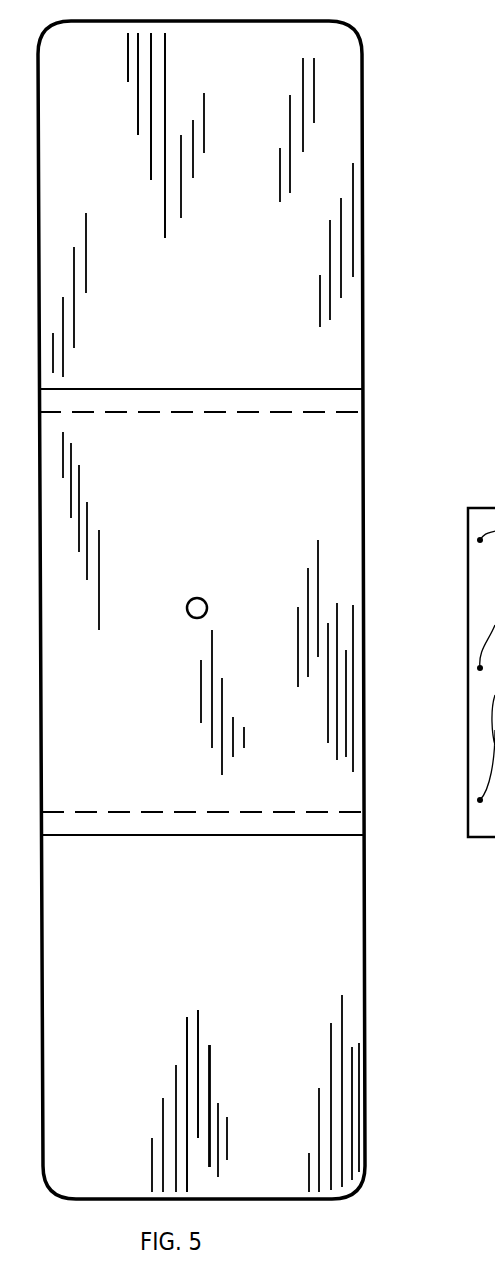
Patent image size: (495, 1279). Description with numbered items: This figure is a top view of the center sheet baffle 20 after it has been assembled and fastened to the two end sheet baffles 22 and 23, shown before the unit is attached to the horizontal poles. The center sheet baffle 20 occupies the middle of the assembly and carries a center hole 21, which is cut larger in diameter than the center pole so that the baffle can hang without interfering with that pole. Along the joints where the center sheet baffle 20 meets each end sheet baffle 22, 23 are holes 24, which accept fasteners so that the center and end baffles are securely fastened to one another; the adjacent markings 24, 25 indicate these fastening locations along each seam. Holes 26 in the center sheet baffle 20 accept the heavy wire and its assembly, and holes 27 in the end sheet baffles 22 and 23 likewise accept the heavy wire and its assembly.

The center sheet baffle 20 is at (363, 596).
The center hole 21 is at (200, 598).
The end sheet baffle 22 is at (364, 1040).
The end sheet baffle 23 is at (363, 217).
The holes 24 is at (68, 402).
The perforation line 25 is at (405, 325).
The holes 26 is at (198, 423).
The holes 27 is at (199, 237).